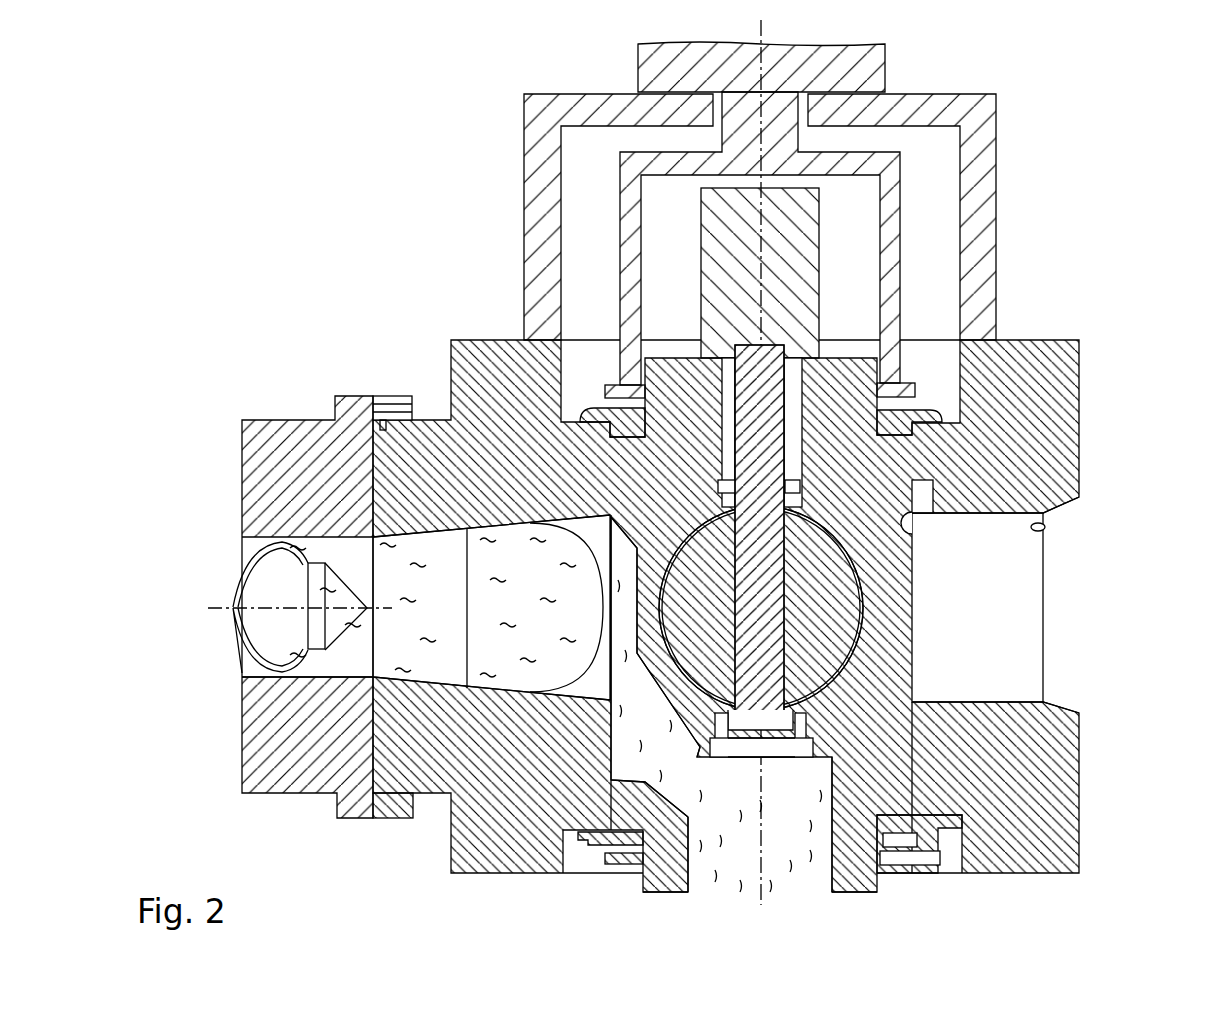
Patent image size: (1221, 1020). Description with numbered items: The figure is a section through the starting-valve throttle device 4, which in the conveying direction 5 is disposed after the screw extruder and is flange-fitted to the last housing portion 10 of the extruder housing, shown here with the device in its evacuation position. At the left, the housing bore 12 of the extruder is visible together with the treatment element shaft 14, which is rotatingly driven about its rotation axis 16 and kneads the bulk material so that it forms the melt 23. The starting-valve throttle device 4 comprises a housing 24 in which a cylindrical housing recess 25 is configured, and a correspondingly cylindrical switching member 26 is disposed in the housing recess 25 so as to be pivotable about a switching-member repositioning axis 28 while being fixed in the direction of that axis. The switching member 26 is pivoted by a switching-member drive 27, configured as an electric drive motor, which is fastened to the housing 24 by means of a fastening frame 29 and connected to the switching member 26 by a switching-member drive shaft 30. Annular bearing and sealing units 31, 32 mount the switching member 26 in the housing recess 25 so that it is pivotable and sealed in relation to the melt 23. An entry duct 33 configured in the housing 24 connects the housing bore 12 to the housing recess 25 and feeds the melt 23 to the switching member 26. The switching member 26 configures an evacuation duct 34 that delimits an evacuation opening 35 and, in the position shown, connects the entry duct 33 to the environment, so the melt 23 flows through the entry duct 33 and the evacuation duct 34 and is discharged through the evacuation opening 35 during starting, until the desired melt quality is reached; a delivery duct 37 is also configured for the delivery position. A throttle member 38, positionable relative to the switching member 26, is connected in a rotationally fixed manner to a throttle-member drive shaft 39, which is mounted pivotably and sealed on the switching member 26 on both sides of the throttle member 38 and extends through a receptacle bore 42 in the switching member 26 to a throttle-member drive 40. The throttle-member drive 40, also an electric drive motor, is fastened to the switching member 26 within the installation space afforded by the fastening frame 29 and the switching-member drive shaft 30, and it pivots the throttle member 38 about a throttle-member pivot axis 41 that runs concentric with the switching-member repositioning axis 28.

The starting-valve throttle device 4 is at (1088, 340).
The conveying direction 5 is at (357, 272).
The housing portion 10 is at (262, 473).
The housing bore 12 is at (253, 547).
The treatment element shaft 14 is at (255, 627).
The rotation axis 16 is at (265, 604).
The melt 23 is at (787, 903).
The housing 24 is at (1053, 408).
The housing recess 25 is at (1045, 527).
The switching member 26 is at (916, 767).
The switching-member drive 27 is at (875, 68).
The switching-member repositioning axis 28 is at (760, 852).
The fastening frame 29 is at (988, 132).
The switching-member drive shaft 30 is at (893, 201).
The bearing and sealing unit 31 is at (922, 418).
The bearing and sealing unit 32 is at (935, 832).
The entry duct 33 is at (520, 527).
The evacuation duct 34 is at (667, 770).
The evacuation opening 35 is at (770, 892).
The delivery duct 37 is at (1060, 643).
The throttle member 38 is at (872, 608).
The throttle-member drive shaft 39 is at (777, 477).
The throttle-member drive 40 is at (812, 279).
The throttle-member pivot axis 41 is at (761, 237).
The receptacle bore 42 is at (793, 447).